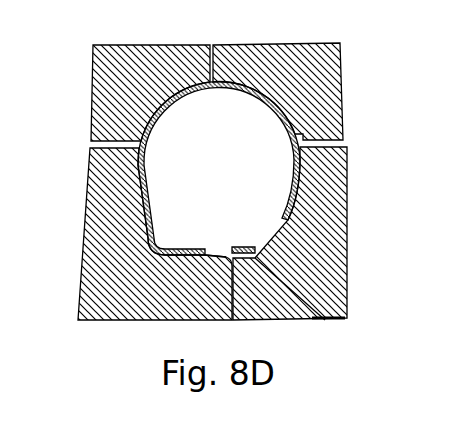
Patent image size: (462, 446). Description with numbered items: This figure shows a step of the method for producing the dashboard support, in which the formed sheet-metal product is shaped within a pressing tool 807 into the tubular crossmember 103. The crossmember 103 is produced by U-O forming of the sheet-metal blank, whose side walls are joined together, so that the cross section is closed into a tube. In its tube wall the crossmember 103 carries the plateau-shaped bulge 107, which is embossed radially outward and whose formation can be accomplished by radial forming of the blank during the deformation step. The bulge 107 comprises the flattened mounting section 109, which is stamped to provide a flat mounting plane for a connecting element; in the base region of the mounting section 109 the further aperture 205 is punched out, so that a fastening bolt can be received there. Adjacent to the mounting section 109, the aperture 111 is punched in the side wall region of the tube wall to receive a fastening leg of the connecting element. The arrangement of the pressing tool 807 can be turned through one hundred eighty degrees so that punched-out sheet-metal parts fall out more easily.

The plateau-shaped bulge 107 is at (133, 130).
The pressing tool 807 is at (320, 53).
The tubular crossmember 103 is at (307, 134).
The further aperture 205 is at (218, 247).
The mounting section 109 is at (245, 248).
The aperture 111 is at (263, 225).